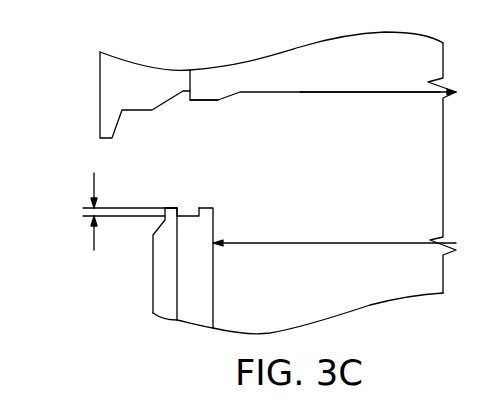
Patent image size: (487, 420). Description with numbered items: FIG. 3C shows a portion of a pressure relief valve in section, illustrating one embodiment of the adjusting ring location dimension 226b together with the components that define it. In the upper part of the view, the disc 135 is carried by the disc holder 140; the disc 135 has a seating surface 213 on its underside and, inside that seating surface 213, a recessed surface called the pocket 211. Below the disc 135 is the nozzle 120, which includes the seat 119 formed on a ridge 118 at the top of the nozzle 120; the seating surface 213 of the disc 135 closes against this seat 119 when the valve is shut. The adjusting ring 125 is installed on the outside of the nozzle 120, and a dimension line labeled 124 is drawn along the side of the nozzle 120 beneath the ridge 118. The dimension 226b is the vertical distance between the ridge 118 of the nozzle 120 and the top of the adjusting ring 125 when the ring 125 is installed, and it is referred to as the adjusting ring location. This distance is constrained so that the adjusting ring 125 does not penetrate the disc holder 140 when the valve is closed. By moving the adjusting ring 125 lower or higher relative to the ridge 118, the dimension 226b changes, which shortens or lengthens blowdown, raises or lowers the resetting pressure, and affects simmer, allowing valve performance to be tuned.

The disc holder 140 is at (107, 83).
The seating surface 213 is at (203, 102).
The disc 135 is at (331, 84).
The pocket 211 is at (395, 92).
The ridge 118 is at (190, 214).
The nozzle 120 is at (192, 237).
The seat 119 is at (208, 196).
The adjusting ring location dimension 226b is at (92, 243).
The adjusting ring 125 is at (162, 287).
The lower surface 124 is at (320, 243).